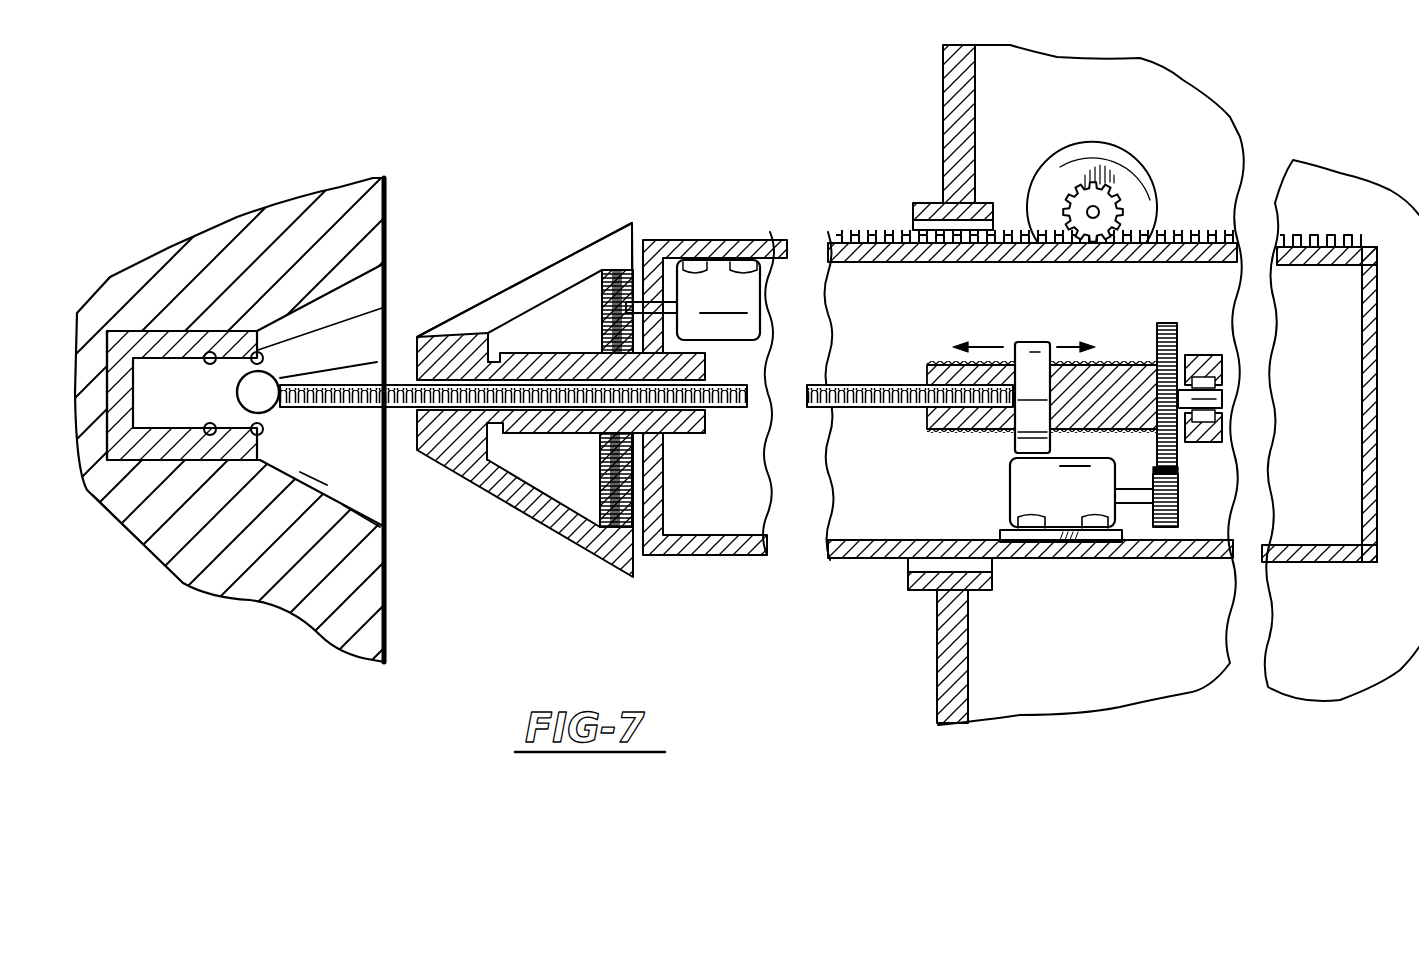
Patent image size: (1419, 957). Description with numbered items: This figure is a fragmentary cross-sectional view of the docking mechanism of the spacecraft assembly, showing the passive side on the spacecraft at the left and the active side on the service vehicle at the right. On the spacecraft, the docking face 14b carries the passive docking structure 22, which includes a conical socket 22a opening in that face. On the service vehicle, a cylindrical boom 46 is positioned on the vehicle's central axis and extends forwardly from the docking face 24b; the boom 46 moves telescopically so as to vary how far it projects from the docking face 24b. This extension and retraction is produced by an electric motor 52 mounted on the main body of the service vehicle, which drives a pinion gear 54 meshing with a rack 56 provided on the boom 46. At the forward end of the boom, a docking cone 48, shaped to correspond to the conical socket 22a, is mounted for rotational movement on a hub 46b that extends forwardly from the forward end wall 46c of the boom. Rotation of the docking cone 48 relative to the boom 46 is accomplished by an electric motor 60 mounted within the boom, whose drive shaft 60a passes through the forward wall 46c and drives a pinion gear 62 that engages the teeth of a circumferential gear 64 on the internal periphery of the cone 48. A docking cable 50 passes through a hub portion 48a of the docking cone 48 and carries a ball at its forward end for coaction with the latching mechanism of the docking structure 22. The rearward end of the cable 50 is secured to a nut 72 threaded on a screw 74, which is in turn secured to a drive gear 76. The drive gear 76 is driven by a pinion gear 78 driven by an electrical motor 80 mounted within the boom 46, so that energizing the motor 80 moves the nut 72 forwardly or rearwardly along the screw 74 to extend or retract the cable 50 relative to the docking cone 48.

The docking face 14b is at (387, 215).
The passive docking structure 22 is at (180, 318).
The conical socket 22a is at (387, 510).
The docking face 24b is at (943, 100).
The boom 46 is at (862, 228).
The hub 46b is at (513, 353).
The forward end wall 46c is at (657, 500).
The docking cone 48 is at (547, 257).
The hub portion 48a is at (555, 427).
The docking cable 50 is at (397, 410).
The electric motor 52 is at (1085, 158).
The pinion gear 54 is at (1105, 187).
The rack 56 is at (1188, 230).
The electric motor 60 is at (720, 257).
The drive shaft 60a is at (657, 253).
The pinion gear 62 is at (607, 268).
The circumferential gear 64 is at (597, 487).
The nut 72 is at (1028, 342).
The screw 74 is at (1103, 362).
The drive gear 76 is at (1168, 322).
The pinion gear 78 is at (1173, 497).
The electrical motor 80 is at (1020, 480).